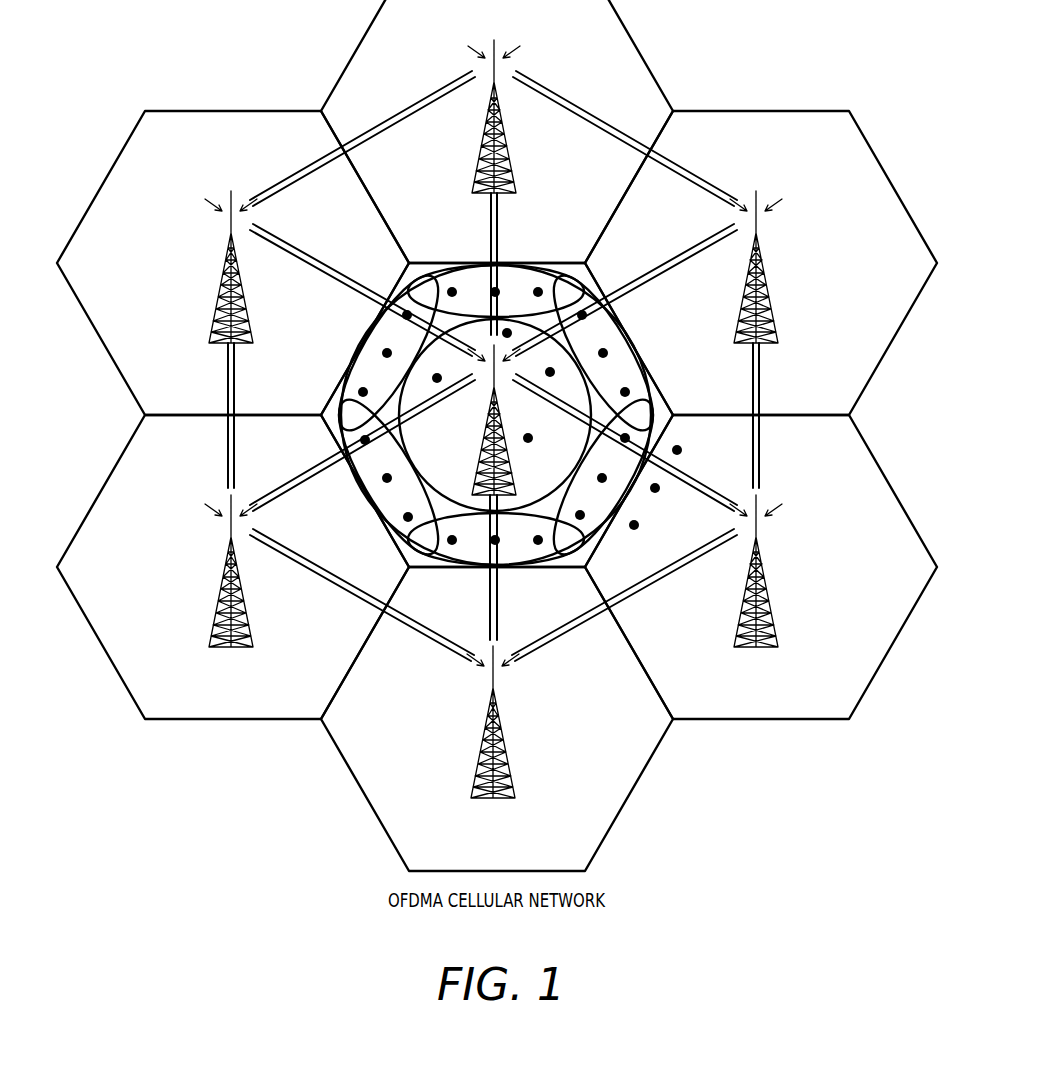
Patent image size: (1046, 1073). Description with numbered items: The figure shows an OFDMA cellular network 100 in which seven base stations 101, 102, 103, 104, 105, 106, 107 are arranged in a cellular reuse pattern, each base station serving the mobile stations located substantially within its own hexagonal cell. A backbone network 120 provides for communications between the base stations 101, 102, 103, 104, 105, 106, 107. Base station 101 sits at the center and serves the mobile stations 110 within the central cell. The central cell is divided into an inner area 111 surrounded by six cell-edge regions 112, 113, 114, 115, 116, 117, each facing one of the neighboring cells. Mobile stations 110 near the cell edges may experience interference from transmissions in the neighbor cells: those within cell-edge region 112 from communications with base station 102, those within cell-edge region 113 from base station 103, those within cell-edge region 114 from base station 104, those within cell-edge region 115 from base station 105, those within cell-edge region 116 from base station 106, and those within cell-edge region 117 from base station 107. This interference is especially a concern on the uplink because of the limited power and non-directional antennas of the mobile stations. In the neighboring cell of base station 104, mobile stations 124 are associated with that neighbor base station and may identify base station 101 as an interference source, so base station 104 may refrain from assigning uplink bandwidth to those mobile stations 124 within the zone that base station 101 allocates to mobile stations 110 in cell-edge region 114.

The OFDMA cellular network 100 is at (270, 813).
The base station 101 is at (508, 452).
The base station 102 is at (500, 108).
The base station 103 is at (777, 333).
The base station 104 is at (778, 630).
The base station 105 is at (514, 785).
The base station 106 is at (252, 636).
The base station 107 is at (242, 285).
The mobile stations 110 is at (452, 286).
The central zone of cell 111 is at (404, 437).
The cell-edge region 112 is at (434, 266).
The cell-edge region 113 is at (642, 396).
The cell-edge region 114 is at (607, 528).
The cell-edge region 115 is at (518, 562).
The cell-edge region 116 is at (410, 548).
The cell-edge region 117 is at (340, 402).
The backbone network 120 is at (295, 183).
The mobile stations 124 is at (683, 450).